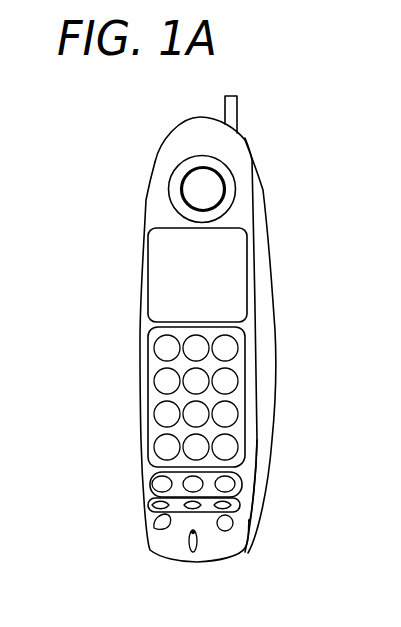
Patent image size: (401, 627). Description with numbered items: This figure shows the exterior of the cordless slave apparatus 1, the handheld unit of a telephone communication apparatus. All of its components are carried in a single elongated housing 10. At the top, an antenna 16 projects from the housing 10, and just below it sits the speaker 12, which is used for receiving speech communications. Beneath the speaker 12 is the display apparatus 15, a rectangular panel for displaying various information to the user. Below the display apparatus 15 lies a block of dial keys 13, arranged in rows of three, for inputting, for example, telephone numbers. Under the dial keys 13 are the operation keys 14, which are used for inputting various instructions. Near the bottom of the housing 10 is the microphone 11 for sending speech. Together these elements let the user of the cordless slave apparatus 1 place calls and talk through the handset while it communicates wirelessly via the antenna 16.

The cordless slave apparatus 1 is at (217, 315).
The housing 10 is at (267, 267).
The microphone 11 is at (188, 540).
The speaker 12 is at (200, 187).
The dial keys 13 is at (165, 382).
The operation keys 14 is at (160, 483).
The display apparatus 15 is at (167, 267).
The antenna 16 is at (233, 111).